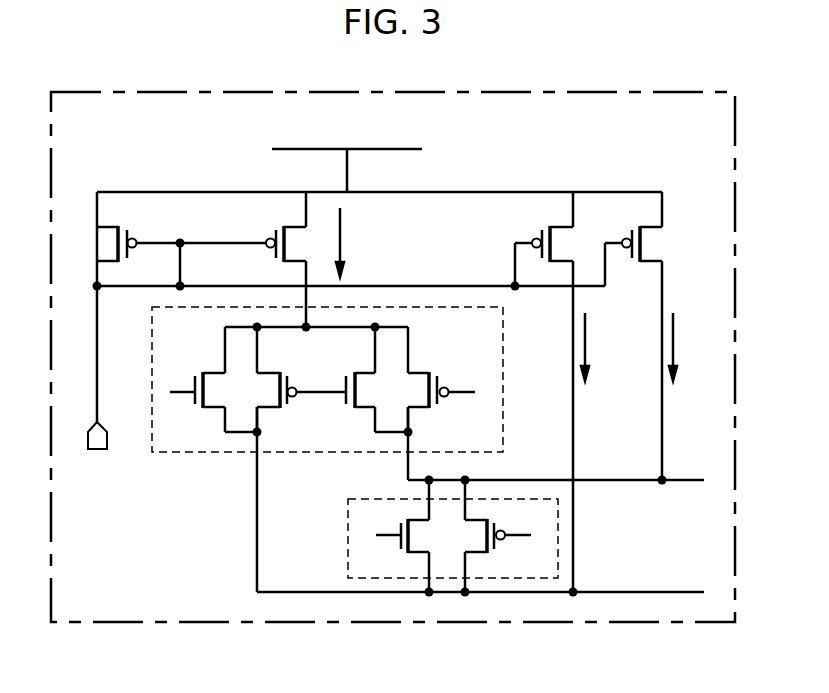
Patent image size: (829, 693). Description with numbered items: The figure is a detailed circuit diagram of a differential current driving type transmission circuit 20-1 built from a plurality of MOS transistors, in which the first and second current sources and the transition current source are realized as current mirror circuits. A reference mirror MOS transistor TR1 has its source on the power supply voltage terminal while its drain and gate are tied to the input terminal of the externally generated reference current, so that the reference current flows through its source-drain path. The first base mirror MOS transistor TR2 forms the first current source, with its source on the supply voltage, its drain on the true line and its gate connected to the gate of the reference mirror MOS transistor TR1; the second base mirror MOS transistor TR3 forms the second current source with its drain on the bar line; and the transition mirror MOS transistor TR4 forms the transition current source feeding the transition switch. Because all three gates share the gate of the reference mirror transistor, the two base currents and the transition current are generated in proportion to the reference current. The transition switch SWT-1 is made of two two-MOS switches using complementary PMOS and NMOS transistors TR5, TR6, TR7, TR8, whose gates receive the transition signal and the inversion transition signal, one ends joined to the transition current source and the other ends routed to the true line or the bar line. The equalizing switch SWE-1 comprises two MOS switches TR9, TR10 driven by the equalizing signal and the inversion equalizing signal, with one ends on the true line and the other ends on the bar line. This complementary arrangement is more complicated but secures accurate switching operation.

The transmission circuit 20-1 is at (735, 238).
The transition switch SWT-1 is at (197, 452).
The equalizing switch SWE-1 is at (348, 535).
The reference mirror MOS transistor TR1 is at (129, 244).
The first base mirror MOS transistor TR2 is at (642, 239).
The second base mirror MOS transistor TR3 is at (550, 239).
The transition mirror MOS transistor TR4 is at (257, 259).
The MOS transistor TR5 is at (366, 379).
The MOS transistor TR6 is at (422, 379).
The MOS transistor TR7 is at (215, 379).
The MOS transistor TR8 is at (296, 379).
The MOS switch TR9 is at (420, 536).
The MOS switch TR10 is at (475, 536).